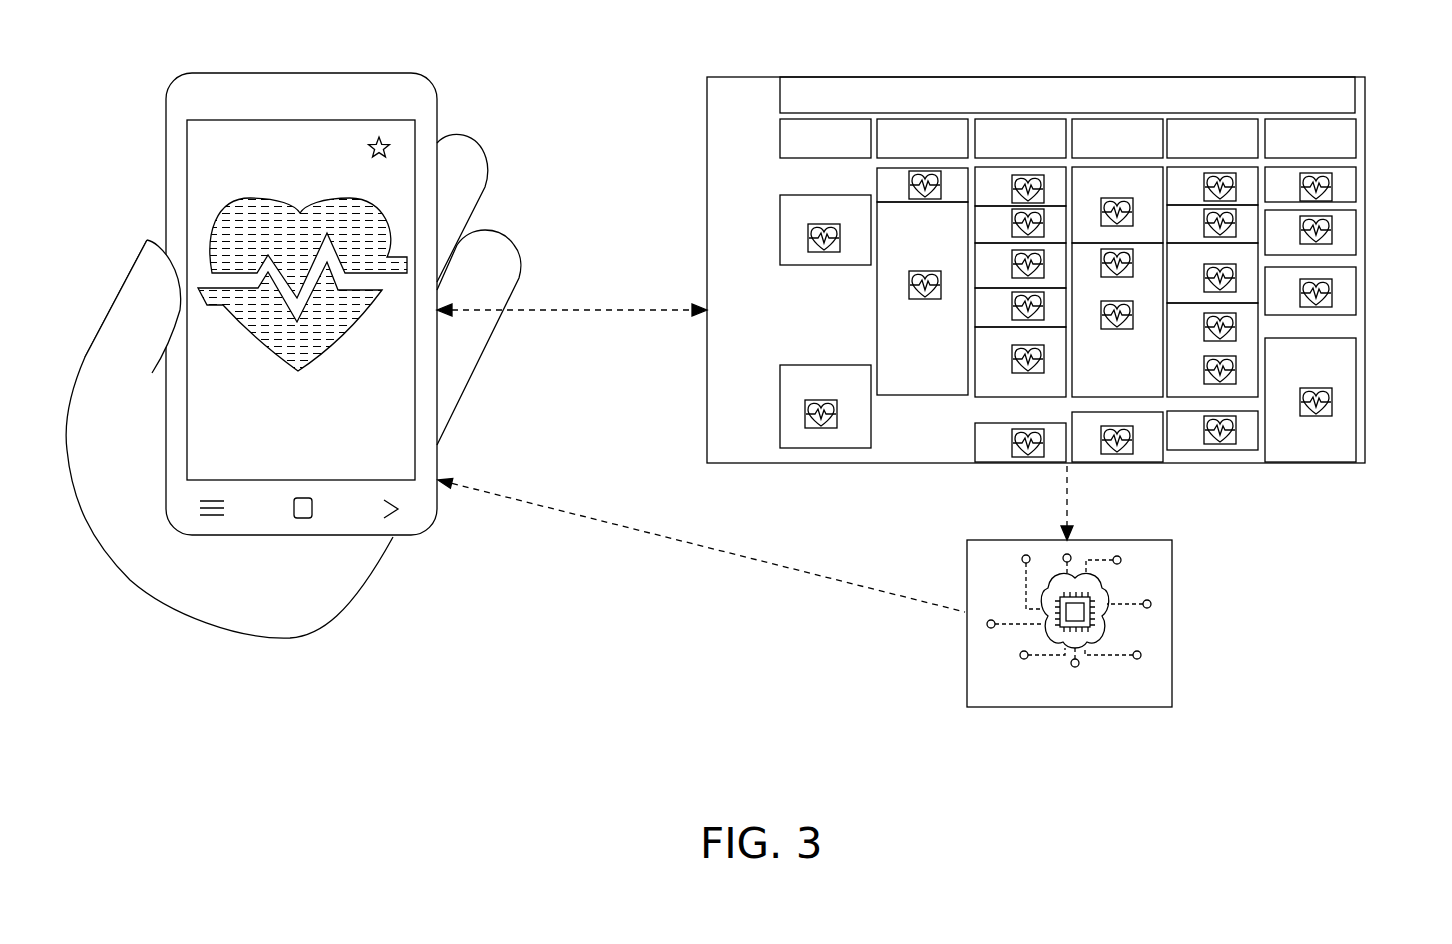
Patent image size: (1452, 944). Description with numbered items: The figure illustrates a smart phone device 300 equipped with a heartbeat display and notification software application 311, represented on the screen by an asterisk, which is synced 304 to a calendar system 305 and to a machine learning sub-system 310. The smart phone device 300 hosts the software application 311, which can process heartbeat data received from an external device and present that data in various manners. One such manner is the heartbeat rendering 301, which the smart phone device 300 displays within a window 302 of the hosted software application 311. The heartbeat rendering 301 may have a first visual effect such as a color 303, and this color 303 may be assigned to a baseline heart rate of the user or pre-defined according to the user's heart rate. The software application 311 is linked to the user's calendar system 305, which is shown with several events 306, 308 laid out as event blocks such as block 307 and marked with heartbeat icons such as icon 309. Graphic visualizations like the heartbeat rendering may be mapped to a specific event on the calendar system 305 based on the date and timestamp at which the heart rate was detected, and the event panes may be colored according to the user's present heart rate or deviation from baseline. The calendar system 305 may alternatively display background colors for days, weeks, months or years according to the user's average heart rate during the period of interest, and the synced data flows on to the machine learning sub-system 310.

The smart phone device 300 is at (398, 537).
The heartbeat rendering 301 is at (316, 376).
The window 302 is at (403, 385).
The color 303 is at (275, 238).
The sync 304 is at (612, 312).
The calendar system 305 is at (1365, 163).
The event 306 is at (864, 390).
The calendar event block 307 is at (872, 430).
The event 308 is at (1129, 378).
The health indicator icon 309 is at (1153, 300).
The machine learning sub-system 310 is at (1172, 627).
The heartbeat display and notification software application 311 is at (390, 144).